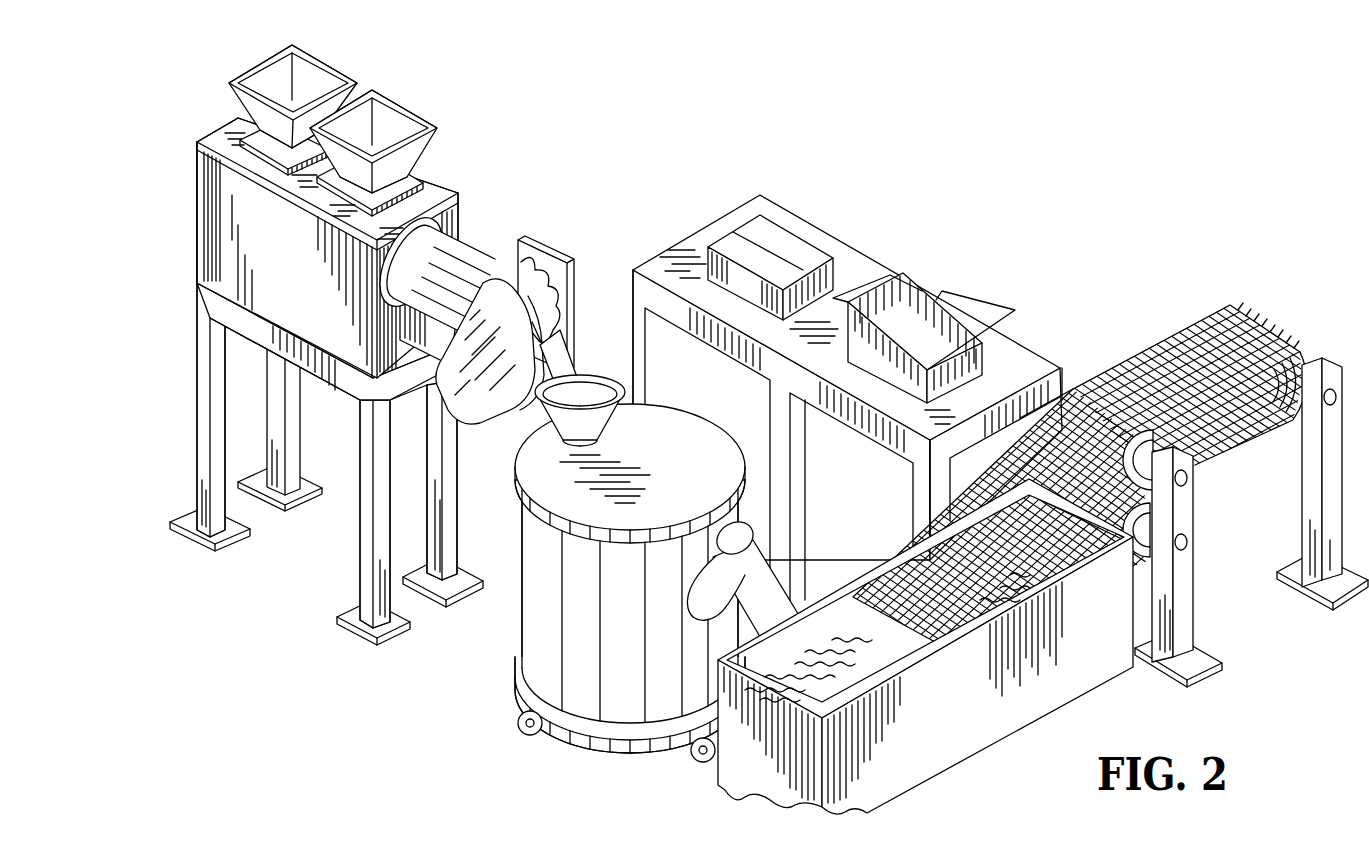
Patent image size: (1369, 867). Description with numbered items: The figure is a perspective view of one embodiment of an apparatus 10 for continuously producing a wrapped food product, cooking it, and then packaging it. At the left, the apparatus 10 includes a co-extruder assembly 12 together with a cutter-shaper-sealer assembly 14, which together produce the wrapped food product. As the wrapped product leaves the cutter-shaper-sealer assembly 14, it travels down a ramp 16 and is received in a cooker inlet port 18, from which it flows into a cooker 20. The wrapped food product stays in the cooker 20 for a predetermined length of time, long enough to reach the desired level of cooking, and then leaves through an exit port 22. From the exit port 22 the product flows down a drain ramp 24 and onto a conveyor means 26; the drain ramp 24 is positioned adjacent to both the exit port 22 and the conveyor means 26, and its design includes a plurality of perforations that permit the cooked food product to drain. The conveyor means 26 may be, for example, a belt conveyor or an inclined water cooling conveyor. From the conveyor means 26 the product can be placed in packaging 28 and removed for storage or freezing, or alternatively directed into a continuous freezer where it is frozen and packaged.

The apparatus 10 is at (769, 433).
The co-extruder assembly 12 is at (443, 185).
The cutter-shaper-sealer assembly 14 is at (556, 252).
The ramp 16 is at (560, 358).
The cooker inlet port 18 is at (590, 405).
The cooker 20 is at (643, 653).
The exit port 22 is at (733, 530).
The drain ramp 24 is at (738, 604).
The conveyor means 26 is at (940, 742).
The packaging 28 is at (798, 247).